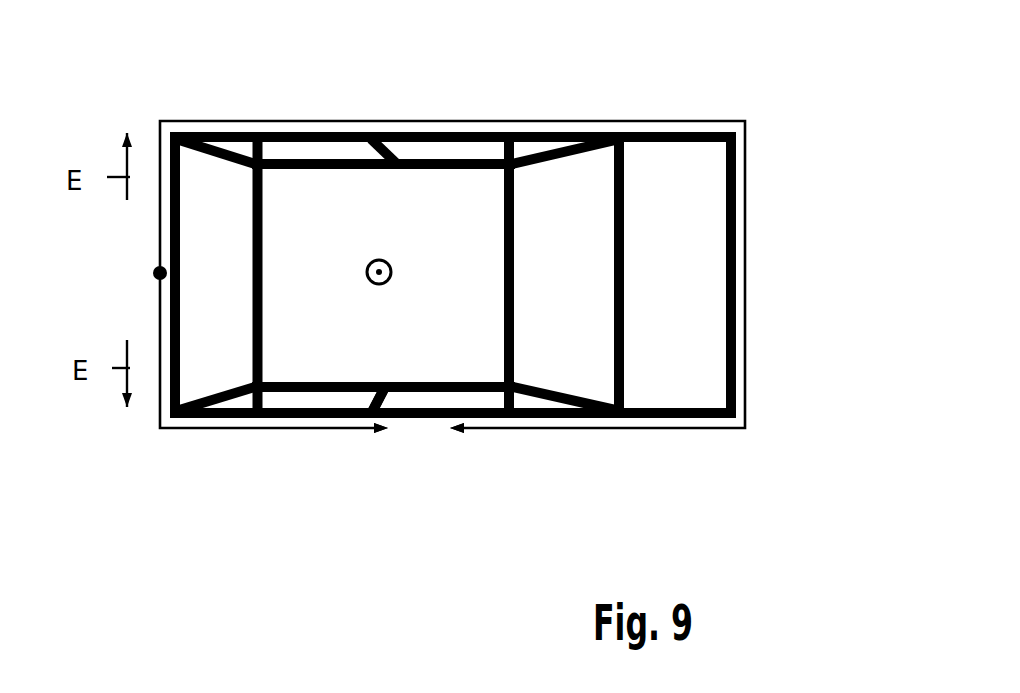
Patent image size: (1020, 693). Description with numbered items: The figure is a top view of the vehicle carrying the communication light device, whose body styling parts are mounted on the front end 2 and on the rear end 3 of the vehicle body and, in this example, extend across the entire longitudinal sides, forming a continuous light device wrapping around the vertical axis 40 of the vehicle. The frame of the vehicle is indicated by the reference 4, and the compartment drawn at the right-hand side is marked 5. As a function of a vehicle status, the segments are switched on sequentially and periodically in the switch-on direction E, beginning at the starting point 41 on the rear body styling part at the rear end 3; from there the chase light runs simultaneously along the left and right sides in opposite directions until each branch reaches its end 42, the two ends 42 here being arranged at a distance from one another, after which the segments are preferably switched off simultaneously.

The front end 2 is at (768, 265).
The rear end 3 is at (130, 307).
The enclosure / cover 4 is at (683, 100).
The compartment 5 is at (685, 311).
The vertical axis 40 is at (381, 259).
The starting point 41 is at (158, 271).
The end 42 is at (371, 447).